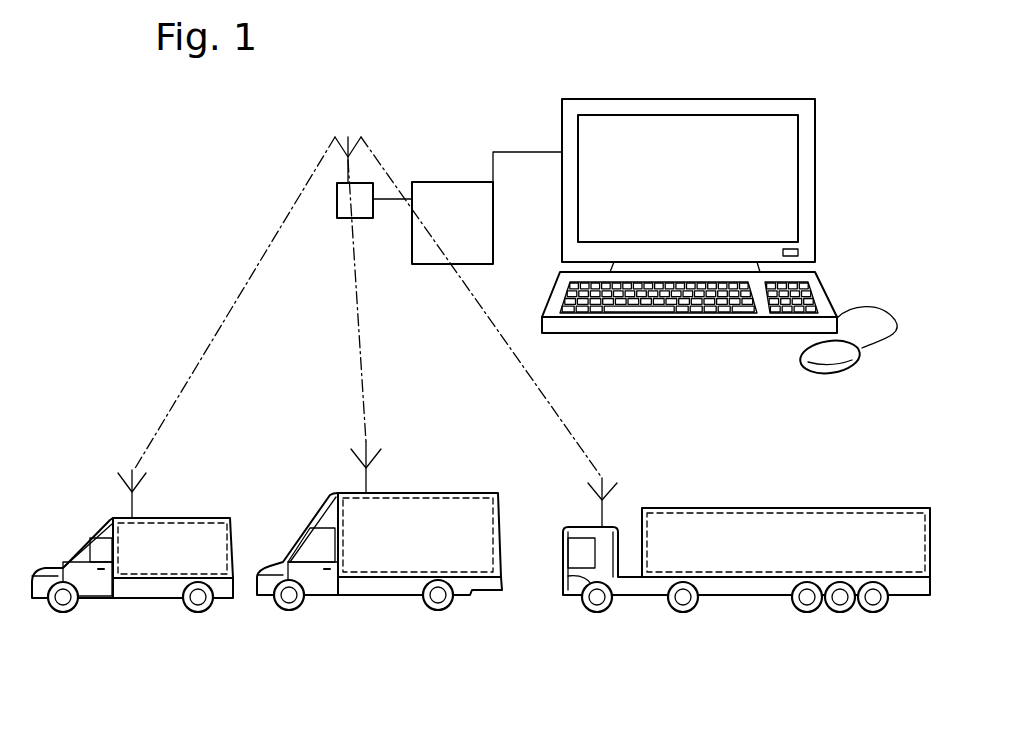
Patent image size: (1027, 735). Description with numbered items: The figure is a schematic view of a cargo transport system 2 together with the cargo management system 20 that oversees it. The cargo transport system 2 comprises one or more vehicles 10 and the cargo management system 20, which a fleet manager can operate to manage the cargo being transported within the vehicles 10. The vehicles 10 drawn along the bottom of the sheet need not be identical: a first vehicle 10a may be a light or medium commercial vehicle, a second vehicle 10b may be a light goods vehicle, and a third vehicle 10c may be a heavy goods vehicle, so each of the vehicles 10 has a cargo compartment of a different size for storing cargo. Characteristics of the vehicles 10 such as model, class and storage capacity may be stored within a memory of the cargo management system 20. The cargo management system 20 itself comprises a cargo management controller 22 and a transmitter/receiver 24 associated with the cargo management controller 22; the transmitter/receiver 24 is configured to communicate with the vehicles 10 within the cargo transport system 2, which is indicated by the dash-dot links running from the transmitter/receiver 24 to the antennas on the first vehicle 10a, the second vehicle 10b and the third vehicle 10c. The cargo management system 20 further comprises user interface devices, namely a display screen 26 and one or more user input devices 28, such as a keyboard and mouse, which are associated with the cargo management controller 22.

The cargo transport system 2 is at (208, 294).
The vehicles 10 is at (481, 551).
The first vehicle 10a is at (133, 600).
The second vehicle 10b is at (386, 597).
The third vehicle 10c is at (760, 598).
The cargo management system 20 is at (526, 119).
The cargo management controller 22 is at (463, 182).
The transmitter/receiver 24 is at (337, 199).
The display screen 26 is at (750, 115).
The user input devices 28 is at (818, 277).